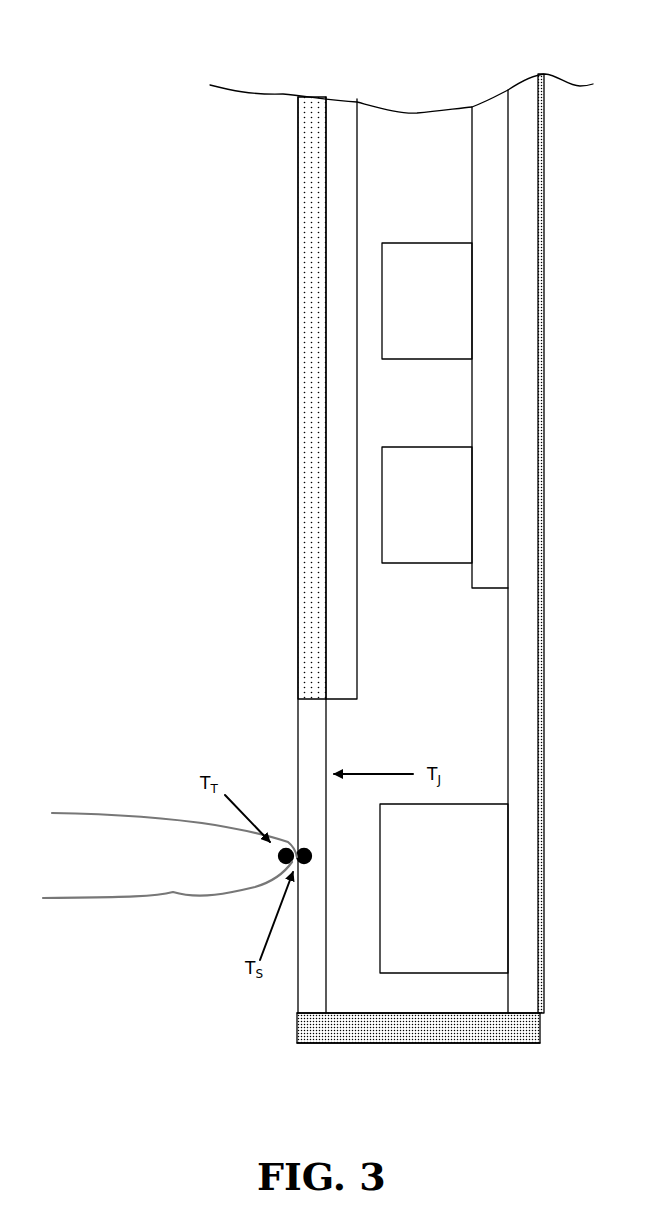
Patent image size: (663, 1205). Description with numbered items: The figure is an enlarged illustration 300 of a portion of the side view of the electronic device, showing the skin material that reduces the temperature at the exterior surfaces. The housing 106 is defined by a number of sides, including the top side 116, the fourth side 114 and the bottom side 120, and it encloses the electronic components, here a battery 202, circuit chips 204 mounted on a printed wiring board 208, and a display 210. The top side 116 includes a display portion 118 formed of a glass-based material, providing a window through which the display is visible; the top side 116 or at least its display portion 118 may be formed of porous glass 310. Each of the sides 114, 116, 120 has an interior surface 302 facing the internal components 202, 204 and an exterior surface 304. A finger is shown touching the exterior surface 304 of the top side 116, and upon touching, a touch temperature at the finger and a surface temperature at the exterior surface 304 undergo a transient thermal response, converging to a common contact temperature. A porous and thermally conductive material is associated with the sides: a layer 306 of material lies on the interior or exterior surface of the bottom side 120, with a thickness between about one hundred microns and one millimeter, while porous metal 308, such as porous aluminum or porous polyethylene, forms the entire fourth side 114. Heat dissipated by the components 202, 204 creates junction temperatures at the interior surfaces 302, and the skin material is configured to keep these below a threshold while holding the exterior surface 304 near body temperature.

The illustration 300 is at (104, 62).
The display portion 118 is at (298, 222).
The porous glass 310 is at (316, 505).
The printed wiring board 208 is at (472, 176).
The circuit chips 204 is at (437, 312).
The layer of material 306 is at (544, 384).
The bottom side 120 is at (528, 620).
The display 210 is at (357, 643).
The interior surface 302 is at (507, 653).
The top side 116 is at (298, 720).
The exterior surface 304 is at (298, 795).
The battery 202 is at (459, 896).
The porous metal 308 is at (493, 1032).
The fourth side 114 is at (357, 1043).
The housing 106 is at (226, 1023).